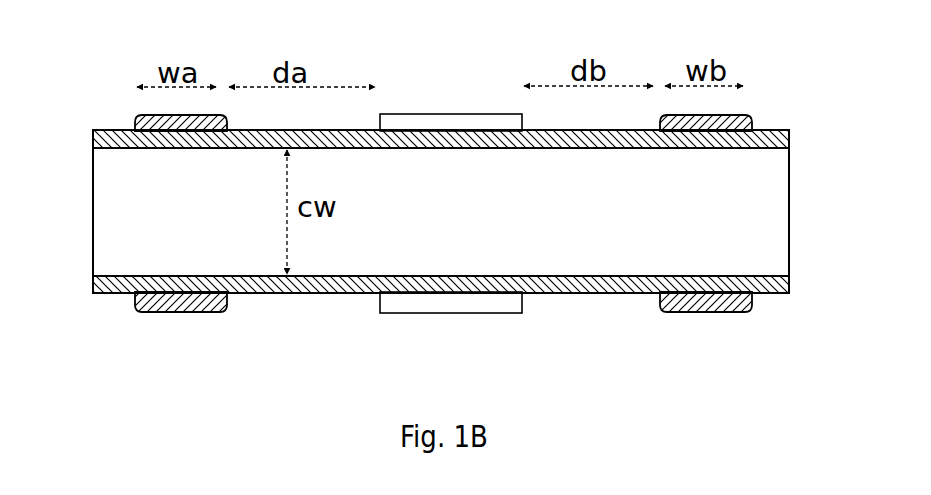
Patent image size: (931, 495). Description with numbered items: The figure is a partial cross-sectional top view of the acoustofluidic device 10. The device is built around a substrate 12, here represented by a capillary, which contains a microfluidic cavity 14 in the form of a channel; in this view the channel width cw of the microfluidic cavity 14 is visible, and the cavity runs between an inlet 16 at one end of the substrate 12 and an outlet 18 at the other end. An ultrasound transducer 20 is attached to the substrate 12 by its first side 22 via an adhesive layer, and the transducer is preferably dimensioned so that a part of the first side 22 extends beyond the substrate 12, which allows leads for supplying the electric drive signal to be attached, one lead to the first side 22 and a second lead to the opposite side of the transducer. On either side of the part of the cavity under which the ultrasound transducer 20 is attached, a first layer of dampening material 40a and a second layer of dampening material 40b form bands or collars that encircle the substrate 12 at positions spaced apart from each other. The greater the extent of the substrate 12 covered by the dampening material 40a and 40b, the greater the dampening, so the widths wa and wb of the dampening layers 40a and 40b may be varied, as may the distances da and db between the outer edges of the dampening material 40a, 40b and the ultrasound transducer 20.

The acoustofluidic device 10 is at (156, 50).
The substrate 12 is at (330, 293).
The microfluidic cavity 14 is at (630, 237).
The inlet 16 is at (93, 253).
The outlet 18 is at (789, 252).
The ultrasound transducer 20 is at (437, 313).
The first side 22 is at (422, 125).
The first layer of dampening material 40a is at (177, 314).
The second layer of dampening material 40b is at (698, 312).